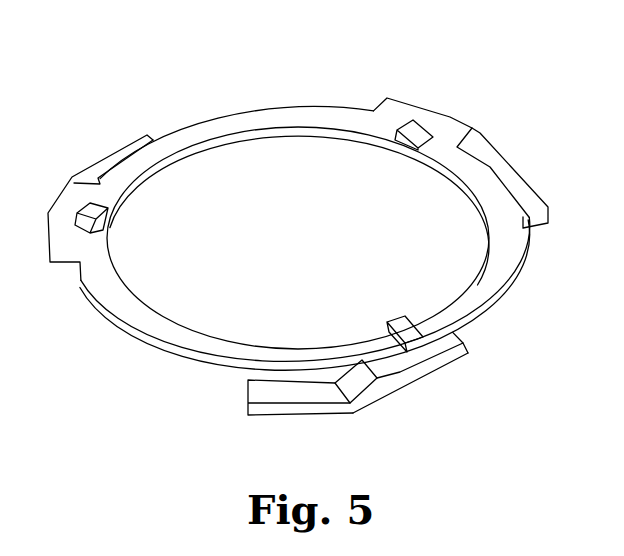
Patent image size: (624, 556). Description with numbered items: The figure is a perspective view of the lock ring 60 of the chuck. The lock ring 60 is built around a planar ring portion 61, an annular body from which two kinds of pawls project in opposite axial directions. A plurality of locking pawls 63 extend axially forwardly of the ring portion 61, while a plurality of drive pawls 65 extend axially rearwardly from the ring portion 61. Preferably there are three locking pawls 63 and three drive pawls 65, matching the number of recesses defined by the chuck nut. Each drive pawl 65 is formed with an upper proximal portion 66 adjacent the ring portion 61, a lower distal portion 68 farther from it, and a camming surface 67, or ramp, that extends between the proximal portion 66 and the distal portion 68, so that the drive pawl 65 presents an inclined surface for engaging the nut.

The lock ring 60 is at (515, 88).
The planar ring portion 61 is at (212, 127).
The locking pawl 63 is at (417, 135).
The drive pawl 65 is at (348, 432).
The upper proximal portion 66 is at (457, 338).
The camming surface 67 is at (372, 398).
The lower distal portion 68 is at (264, 398).